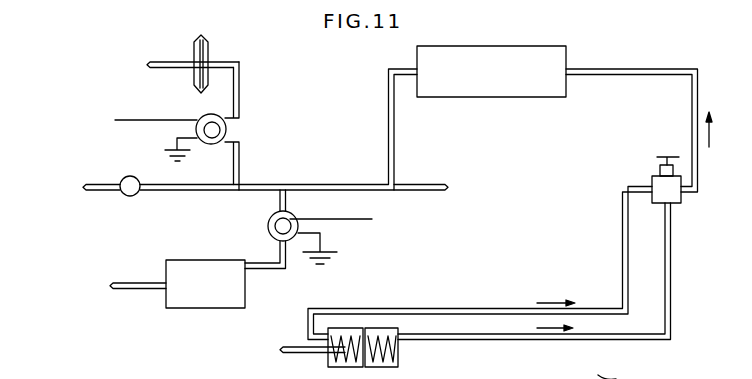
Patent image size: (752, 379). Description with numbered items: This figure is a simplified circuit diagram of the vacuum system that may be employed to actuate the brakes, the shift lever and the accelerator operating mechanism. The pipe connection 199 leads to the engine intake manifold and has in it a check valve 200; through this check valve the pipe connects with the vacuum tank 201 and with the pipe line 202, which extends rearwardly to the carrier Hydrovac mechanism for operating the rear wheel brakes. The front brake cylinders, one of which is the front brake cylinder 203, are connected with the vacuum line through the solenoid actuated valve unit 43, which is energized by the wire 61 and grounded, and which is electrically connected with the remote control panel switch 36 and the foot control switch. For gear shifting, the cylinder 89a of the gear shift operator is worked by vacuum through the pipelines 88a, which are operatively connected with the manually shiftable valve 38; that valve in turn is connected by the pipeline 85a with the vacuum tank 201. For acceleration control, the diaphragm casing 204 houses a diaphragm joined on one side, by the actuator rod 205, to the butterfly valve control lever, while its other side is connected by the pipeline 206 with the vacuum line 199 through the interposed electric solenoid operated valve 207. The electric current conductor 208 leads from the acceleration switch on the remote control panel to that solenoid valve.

The pipe connection 199 is at (110, 188).
The check valve 200 is at (134, 196).
The vacuum tank 201 is at (487, 60).
The pipe line 202 is at (420, 185).
The front brake cylinder 203 is at (220, 300).
The diaphragm casing 204 is at (195, 48).
The actuator rod 205 is at (167, 64).
The pipeline 206 is at (241, 99).
The electric solenoid operated valve 207 is at (220, 129).
The electric current conductor 208 is at (131, 122).
The solenoid actuated valve unit 43 is at (268, 226).
The wire 61 is at (347, 206).
The pipeline 85a is at (627, 68).
The manually shiftable valve 38 is at (683, 204).
The pipelines 88a is at (468, 335).
The cylinder 89a is at (398, 358).
The remote control panel switch 36 is at (625, 378).